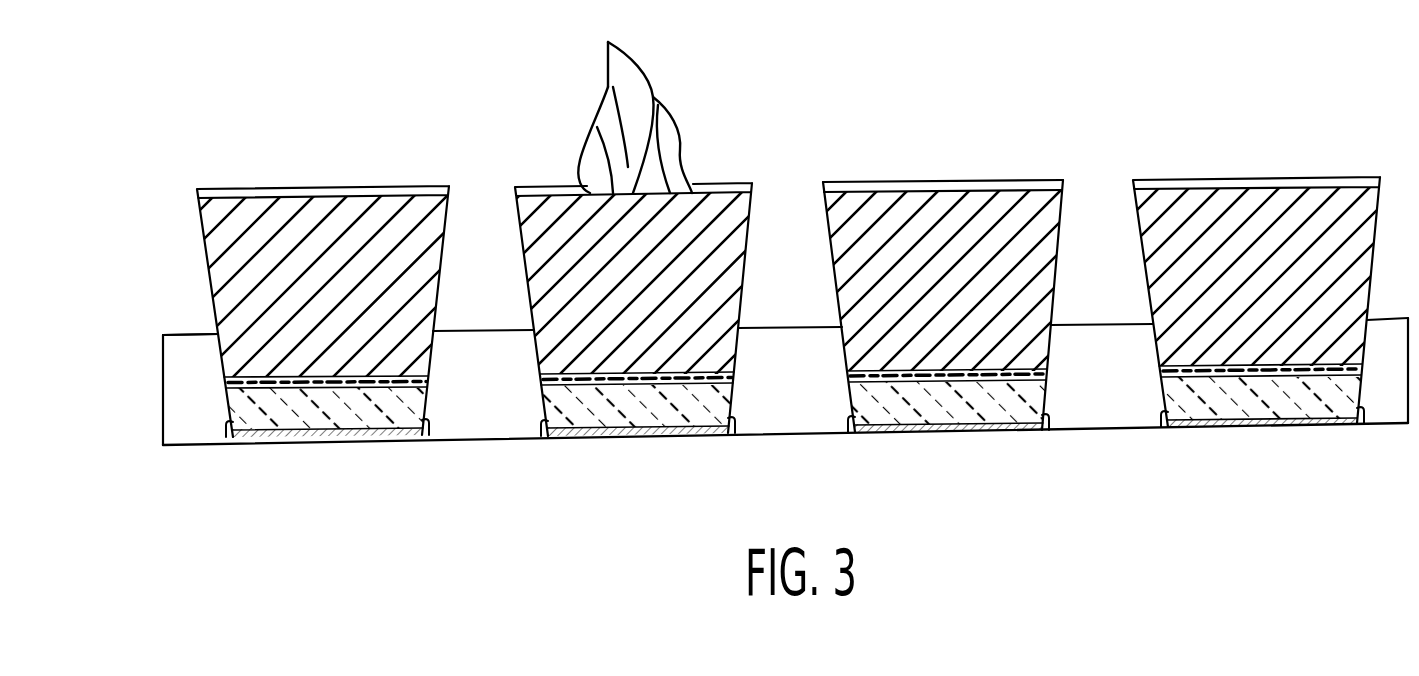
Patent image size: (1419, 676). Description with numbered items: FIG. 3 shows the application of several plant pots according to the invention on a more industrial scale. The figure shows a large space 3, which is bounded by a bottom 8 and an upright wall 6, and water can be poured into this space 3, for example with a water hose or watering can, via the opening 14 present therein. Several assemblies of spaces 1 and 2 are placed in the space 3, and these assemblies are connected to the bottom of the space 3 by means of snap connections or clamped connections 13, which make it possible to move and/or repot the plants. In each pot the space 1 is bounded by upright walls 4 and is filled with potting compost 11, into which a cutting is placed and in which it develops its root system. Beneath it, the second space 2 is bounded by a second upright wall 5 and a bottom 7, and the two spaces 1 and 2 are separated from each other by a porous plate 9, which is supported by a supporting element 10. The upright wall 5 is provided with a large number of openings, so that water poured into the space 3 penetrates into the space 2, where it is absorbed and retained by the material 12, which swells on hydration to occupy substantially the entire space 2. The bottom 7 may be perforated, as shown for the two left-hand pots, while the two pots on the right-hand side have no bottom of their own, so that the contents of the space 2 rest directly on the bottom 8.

The space 1 is at (883, 293).
The second space 2 is at (920, 402).
The third space 3 is at (470, 422).
The upright wall 4 is at (835, 277).
The second upright wall 5 is at (852, 398).
The upright wall 6 is at (160, 392).
The bottom 7 is at (292, 447).
The bottom 8 is at (1115, 433).
The porous plate 9 is at (1045, 373).
The supporting element 10 is at (1043, 398).
The potting compost 11 is at (978, 228).
The material 12 is at (970, 403).
The snap connections or clamped connections 13 is at (745, 433).
The opening 14 is at (192, 342).